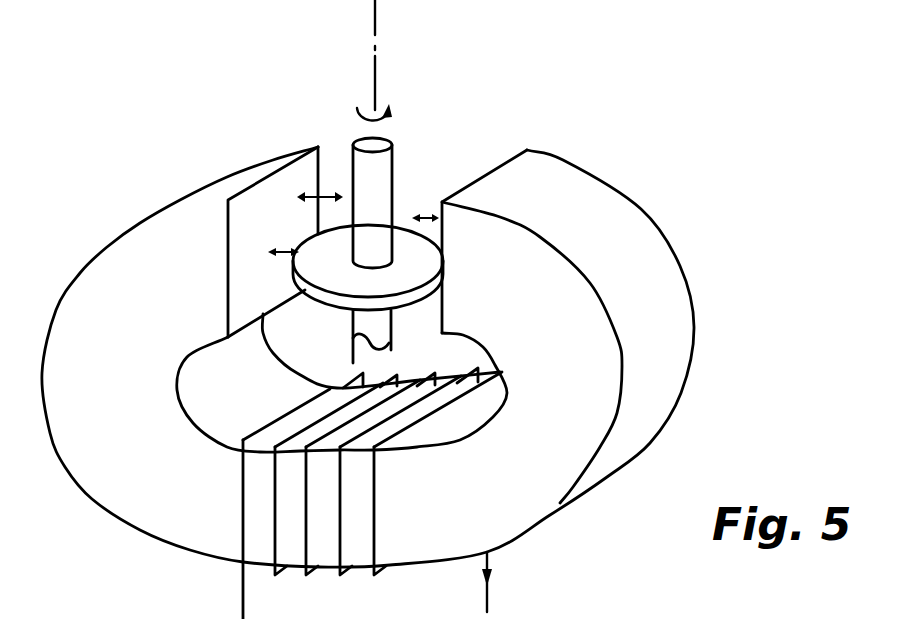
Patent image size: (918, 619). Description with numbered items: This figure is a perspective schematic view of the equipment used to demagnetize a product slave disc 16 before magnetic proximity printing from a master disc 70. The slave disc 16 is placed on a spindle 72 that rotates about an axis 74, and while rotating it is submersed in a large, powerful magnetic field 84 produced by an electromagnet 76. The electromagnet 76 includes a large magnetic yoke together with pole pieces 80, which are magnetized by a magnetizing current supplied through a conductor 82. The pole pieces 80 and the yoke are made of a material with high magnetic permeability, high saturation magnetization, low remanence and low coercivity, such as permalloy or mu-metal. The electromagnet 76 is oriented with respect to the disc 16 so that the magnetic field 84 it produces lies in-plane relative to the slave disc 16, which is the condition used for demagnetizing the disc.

The slave disc 16 is at (402, 243).
The master disc 70 is at (512, 498).
The spindle 72 is at (392, 160).
The axis 74 is at (373, 32).
The electromagnet 76 is at (722, 264).
The pole pieces 80 is at (257, 207).
The conductor 82 is at (509, 580).
The magnetic field 84 is at (428, 205).